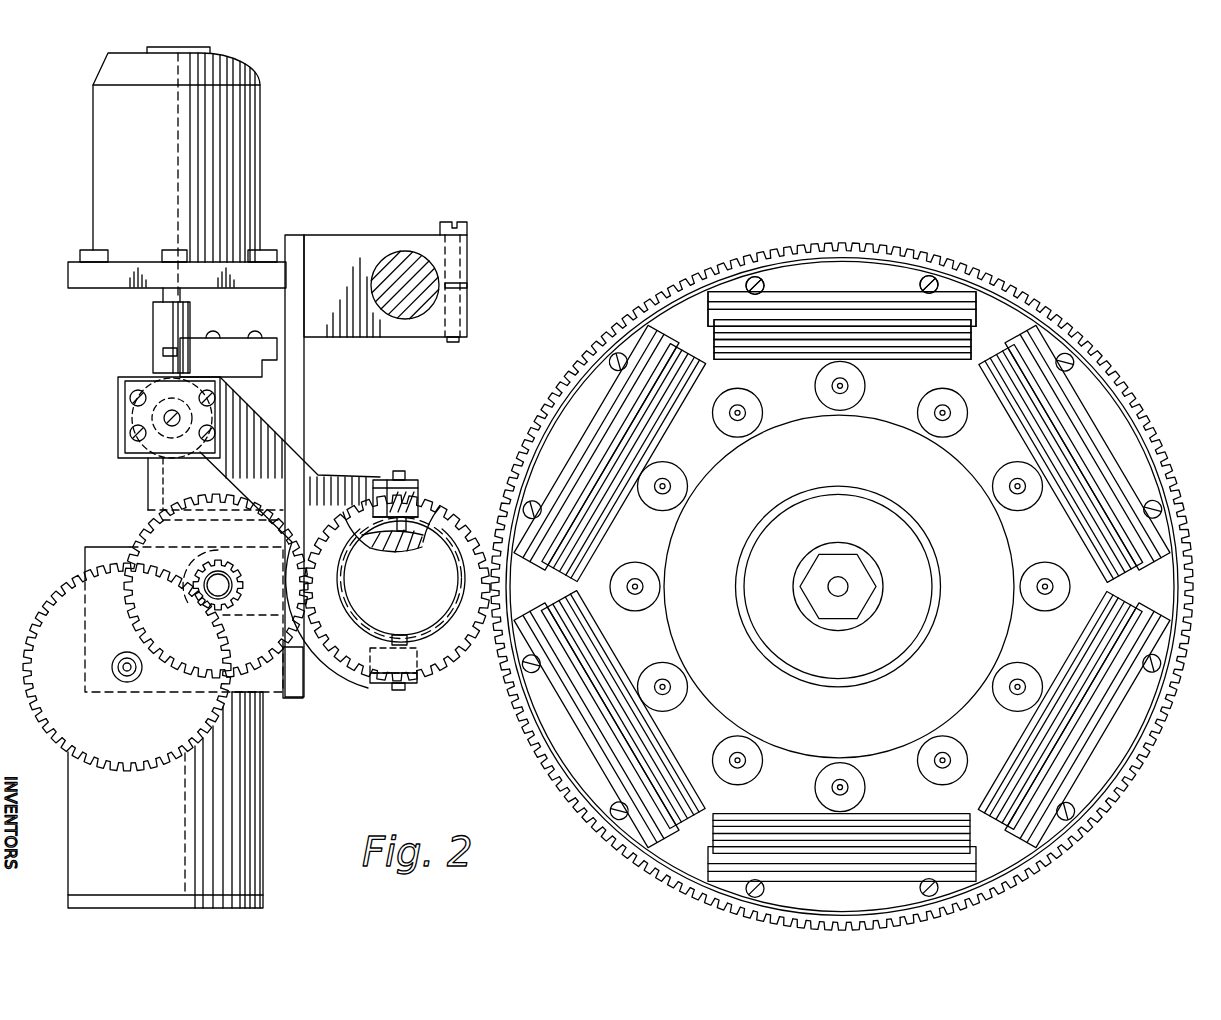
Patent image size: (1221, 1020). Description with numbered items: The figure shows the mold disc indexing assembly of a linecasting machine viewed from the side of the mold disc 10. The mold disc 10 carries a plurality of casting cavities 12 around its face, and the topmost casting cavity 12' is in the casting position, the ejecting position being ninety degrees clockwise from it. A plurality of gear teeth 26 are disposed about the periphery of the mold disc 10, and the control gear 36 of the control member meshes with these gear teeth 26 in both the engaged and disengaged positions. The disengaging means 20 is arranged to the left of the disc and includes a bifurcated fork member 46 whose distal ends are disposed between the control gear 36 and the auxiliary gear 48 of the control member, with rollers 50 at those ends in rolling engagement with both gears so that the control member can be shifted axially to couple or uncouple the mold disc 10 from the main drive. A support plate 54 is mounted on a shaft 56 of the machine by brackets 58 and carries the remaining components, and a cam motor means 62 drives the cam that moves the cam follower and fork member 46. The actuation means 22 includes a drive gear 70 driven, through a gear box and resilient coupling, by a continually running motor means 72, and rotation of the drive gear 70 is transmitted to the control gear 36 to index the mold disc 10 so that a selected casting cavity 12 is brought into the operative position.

The mold disc 10 is at (1020, 290).
The casting cavities 12 is at (837, 587).
The topmost casting cavity 12' is at (842, 285).
The disengaging means 20 is at (117, 359).
The actuation means 22 is at (117, 539).
The gear teeth 26 is at (940, 258).
The control gear 36 is at (435, 508).
The fork member 46 is at (317, 473).
The auxiliary gear 48 is at (372, 662).
The rollers 50 is at (383, 490).
The support plate 54 is at (297, 248).
The shaft 56 is at (410, 265).
The brackets 58 is at (350, 253).
The cam motor means 62 is at (240, 158).
The drive gear 70 is at (253, 652).
The motor means 72 is at (233, 803).